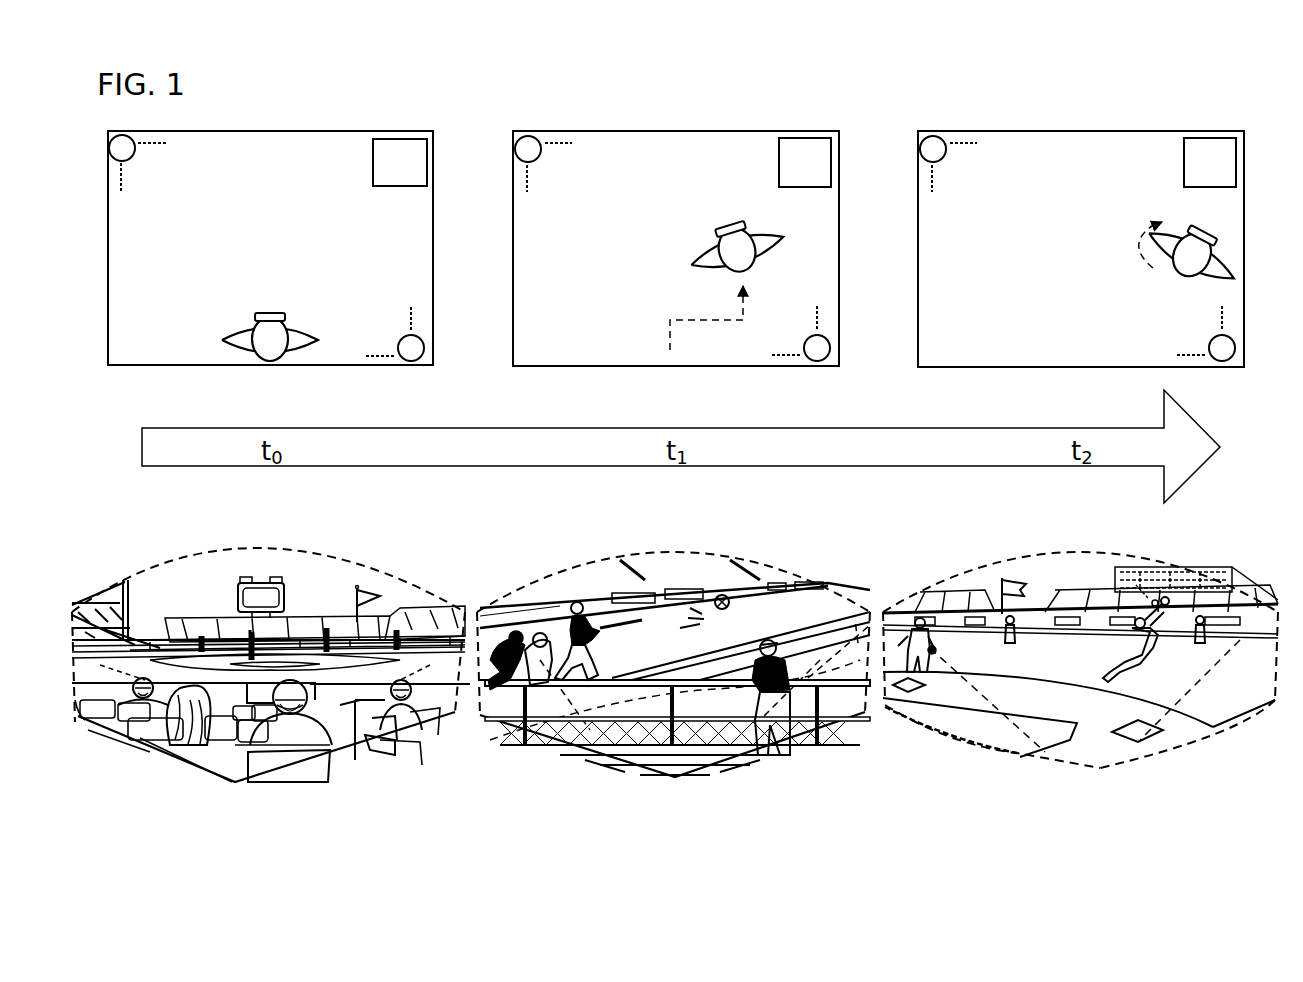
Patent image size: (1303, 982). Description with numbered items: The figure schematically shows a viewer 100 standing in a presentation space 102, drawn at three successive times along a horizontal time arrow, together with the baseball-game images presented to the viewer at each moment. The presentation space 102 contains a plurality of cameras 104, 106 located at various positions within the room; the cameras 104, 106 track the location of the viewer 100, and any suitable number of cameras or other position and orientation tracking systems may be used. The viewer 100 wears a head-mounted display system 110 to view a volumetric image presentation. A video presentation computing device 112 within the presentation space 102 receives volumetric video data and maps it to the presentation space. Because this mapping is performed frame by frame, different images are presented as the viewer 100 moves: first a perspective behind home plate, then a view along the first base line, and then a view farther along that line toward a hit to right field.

The viewer 100 is at (250, 308).
The presentation space 102 is at (278, 142).
The camera 104 is at (135, 155).
The camera 106 is at (398, 344).
The head-mounted display system 110 is at (272, 313).
The video presentation computing device 112 is at (804, 162).